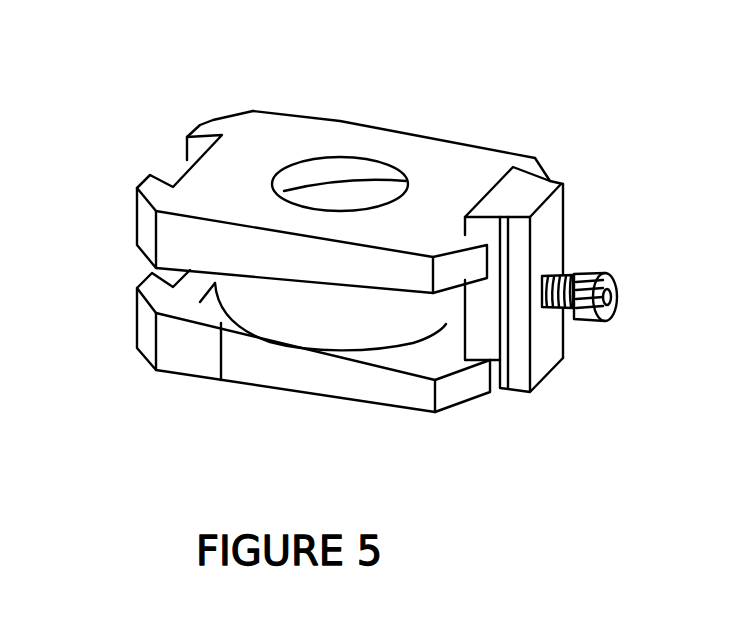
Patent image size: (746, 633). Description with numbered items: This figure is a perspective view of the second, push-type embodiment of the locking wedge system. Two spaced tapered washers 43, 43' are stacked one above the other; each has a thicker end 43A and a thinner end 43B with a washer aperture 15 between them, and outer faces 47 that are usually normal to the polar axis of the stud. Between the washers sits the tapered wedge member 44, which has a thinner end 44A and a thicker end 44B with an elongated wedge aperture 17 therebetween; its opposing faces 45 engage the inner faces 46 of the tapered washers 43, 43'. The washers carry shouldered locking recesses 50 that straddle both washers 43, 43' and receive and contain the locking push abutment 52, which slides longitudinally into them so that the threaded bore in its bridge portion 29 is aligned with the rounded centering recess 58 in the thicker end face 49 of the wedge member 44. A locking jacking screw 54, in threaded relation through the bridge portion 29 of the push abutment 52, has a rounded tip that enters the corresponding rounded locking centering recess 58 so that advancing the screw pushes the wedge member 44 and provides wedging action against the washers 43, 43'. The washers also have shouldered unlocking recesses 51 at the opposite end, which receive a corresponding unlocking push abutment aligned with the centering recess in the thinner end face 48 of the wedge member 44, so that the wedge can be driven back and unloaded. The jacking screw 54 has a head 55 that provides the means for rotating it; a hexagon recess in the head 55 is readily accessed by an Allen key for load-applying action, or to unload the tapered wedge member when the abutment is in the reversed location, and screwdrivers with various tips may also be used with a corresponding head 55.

The washer aperture 15 is at (340, 126).
The elongated wedge aperture 17 is at (384, 136).
The bridge portion 29 is at (609, 286).
The tapered washer 43 is at (354, 192).
The tapered washer 43' is at (309, 370).
The thicker end 43A is at (126, 193).
The thinner end 43B is at (553, 340).
The tapered wedge member 44 is at (323, 316).
The thinner end 44A is at (140, 246).
The thicker end 44B is at (342, 420).
The opposing faces 45 is at (193, 402).
The inner faces 46 is at (114, 286).
The outer faces 47 is at (419, 313).
The thinner end face 48 is at (111, 372).
The thicker end face 49 is at (400, 413).
The shouldered locking recess 50 is at (446, 353).
The shouldered unlocking recess 51 is at (142, 128).
The locking push abutment 52 is at (553, 279).
The locking jacking screw 54 is at (573, 346).
The head 55 is at (621, 310).
The centering recess 58 is at (425, 321).